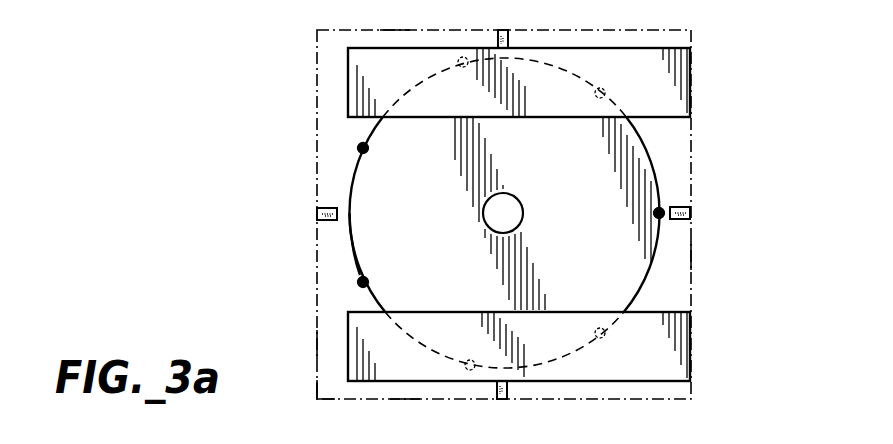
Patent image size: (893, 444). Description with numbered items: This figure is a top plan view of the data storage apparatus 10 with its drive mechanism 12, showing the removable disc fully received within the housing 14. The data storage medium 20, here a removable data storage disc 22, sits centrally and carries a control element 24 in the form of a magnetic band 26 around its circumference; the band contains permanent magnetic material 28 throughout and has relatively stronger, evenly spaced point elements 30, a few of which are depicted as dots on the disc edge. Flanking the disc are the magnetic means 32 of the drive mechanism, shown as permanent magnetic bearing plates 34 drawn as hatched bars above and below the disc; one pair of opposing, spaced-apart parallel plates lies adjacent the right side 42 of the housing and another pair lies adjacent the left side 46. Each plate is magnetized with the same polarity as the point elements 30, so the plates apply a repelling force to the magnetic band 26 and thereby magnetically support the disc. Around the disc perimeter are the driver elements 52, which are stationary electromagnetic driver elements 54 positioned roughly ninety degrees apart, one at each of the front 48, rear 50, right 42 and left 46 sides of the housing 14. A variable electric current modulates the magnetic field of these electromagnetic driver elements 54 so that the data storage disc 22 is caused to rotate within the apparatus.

The data storage apparatus 10 is at (728, 300).
The drive mechanism 12 is at (322, 346).
The housing 14 is at (321, 400).
The data storage medium 20 is at (670, 136).
The data storage disc 22 is at (373, 170).
The control element 24 is at (666, 170).
The magnetic band 26 is at (356, 270).
The permanent magnetic material 28 is at (352, 250).
The point elements 30 is at (363, 148).
The magnetic means 32 is at (589, 63).
The permanent magnetic bearing plate 34 is at (653, 60).
The right side 42 is at (397, 30).
The left side 46 is at (405, 399).
The front 48 is at (690, 254).
The rear 50 is at (318, 392).
The driver elements 52 is at (502, 18).
The electromagnetic driver elements 54 is at (510, 43).